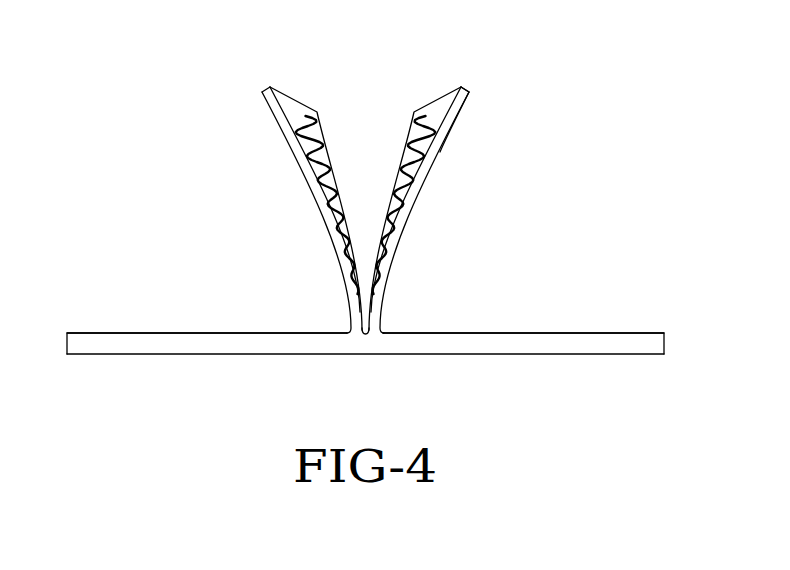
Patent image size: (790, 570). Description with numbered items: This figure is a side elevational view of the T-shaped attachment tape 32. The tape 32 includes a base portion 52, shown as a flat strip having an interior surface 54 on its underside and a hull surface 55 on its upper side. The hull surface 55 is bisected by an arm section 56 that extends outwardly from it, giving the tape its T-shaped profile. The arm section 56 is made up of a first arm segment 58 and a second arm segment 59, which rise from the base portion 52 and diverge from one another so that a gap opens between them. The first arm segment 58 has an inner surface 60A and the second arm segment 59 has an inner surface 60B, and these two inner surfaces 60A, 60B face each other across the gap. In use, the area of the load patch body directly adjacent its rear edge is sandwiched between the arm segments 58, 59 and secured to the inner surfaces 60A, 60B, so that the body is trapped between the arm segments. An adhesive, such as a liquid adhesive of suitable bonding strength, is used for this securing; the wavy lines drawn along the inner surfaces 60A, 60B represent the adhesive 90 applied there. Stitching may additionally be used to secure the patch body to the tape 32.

The T-shaped attachment tape 32 is at (240, 203).
The base portion 52 is at (470, 333).
The interior surface 54 is at (209, 354).
The hull surface 55 is at (209, 333).
The arm section 56 is at (432, 168).
The first arm segment 58 is at (263, 92).
The second arm segment 59 is at (468, 92).
The inner surface of first arm segment 60A is at (293, 110).
The inner surface of second arm segment 60B is at (438, 110).
The adhesive 90 is at (406, 155).